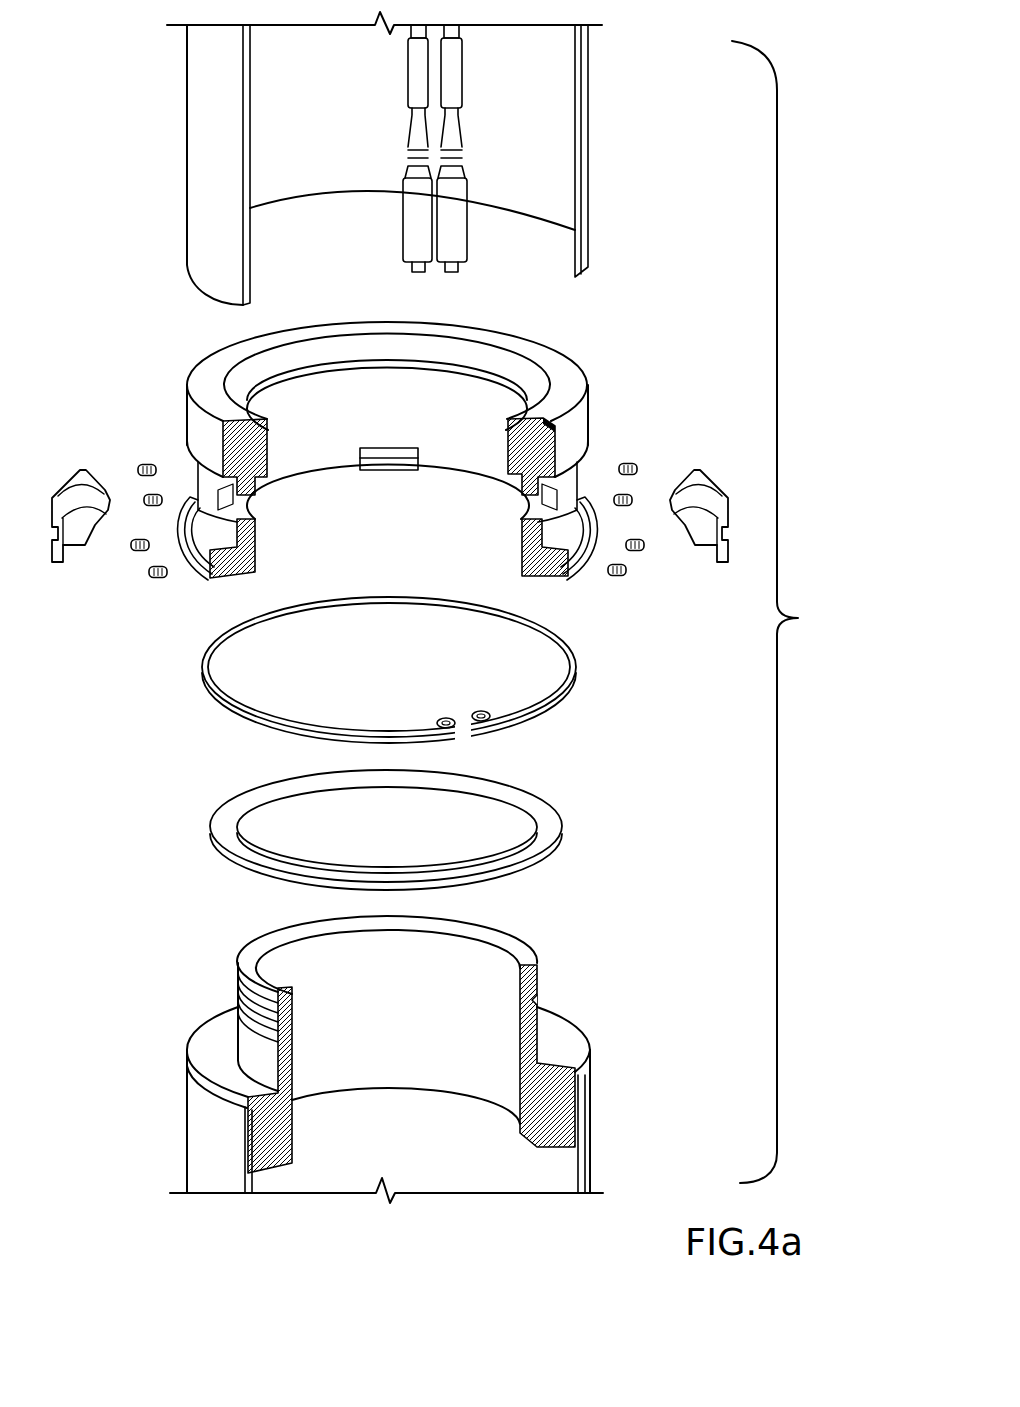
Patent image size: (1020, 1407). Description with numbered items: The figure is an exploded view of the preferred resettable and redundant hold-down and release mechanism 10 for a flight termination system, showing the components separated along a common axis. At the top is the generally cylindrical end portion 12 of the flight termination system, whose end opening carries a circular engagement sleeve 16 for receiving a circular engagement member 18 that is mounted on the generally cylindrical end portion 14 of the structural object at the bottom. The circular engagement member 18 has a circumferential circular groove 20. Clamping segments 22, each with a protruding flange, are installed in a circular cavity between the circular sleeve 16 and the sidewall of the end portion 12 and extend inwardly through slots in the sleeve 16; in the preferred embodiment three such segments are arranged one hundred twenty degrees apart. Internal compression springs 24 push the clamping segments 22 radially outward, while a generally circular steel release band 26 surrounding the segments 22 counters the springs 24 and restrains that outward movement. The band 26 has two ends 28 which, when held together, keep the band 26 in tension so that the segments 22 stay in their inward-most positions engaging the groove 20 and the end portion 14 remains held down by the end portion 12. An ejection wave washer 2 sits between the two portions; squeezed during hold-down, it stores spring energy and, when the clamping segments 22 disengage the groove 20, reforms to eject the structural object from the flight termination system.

The ejection wave washer 2 is at (550, 833).
The hold-down and release mechanism 10 is at (815, 510).
The end portion of the flight termination system 12 is at (195, 168).
The end portion of the structural object 14 is at (423, 1059).
The circular engagement sleeve 16 is at (238, 580).
The circular engagement member 18 is at (538, 979).
The circumferential circular groove 20 is at (540, 1000).
The clamping segment 22 is at (80, 543).
The internal compression spring 24 is at (163, 493).
The circular release band 26 is at (410, 687).
The end of the circular release band 28 is at (437, 725).